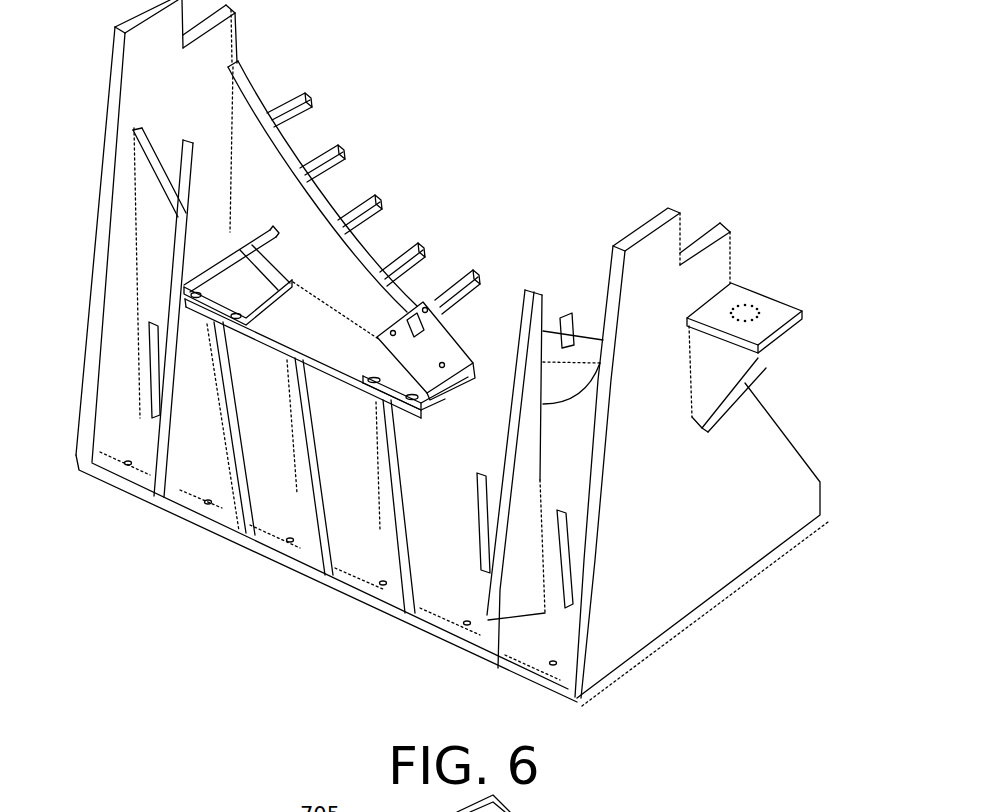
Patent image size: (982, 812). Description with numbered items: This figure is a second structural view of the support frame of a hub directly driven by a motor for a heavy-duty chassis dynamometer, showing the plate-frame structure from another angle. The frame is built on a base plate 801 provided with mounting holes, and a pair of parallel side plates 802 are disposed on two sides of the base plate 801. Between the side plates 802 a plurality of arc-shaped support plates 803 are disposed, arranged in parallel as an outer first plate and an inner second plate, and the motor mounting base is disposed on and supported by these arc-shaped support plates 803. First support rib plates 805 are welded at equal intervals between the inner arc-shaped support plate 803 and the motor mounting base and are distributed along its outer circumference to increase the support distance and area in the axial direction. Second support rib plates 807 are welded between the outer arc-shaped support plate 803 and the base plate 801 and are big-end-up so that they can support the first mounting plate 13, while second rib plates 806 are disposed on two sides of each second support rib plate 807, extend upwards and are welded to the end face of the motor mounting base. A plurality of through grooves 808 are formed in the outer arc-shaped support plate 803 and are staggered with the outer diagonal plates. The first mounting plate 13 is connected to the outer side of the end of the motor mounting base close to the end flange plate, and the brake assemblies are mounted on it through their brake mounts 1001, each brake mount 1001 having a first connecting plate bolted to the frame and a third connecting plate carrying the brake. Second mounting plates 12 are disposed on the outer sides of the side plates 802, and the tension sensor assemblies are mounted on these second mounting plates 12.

The base plate 801 is at (537, 648).
The side plates 802 is at (150, 93).
The arc-shaped support plates 803 is at (240, 115).
The first support rib plates 805 is at (412, 247).
The second rib plates 806 is at (187, 438).
The second support rib plates 807 is at (335, 523).
The through grooves 808 is at (492, 520).
The first mounting plate 13 is at (287, 333).
The brake mount 1001 is at (262, 270).
The second mounting plates 12 is at (775, 315).